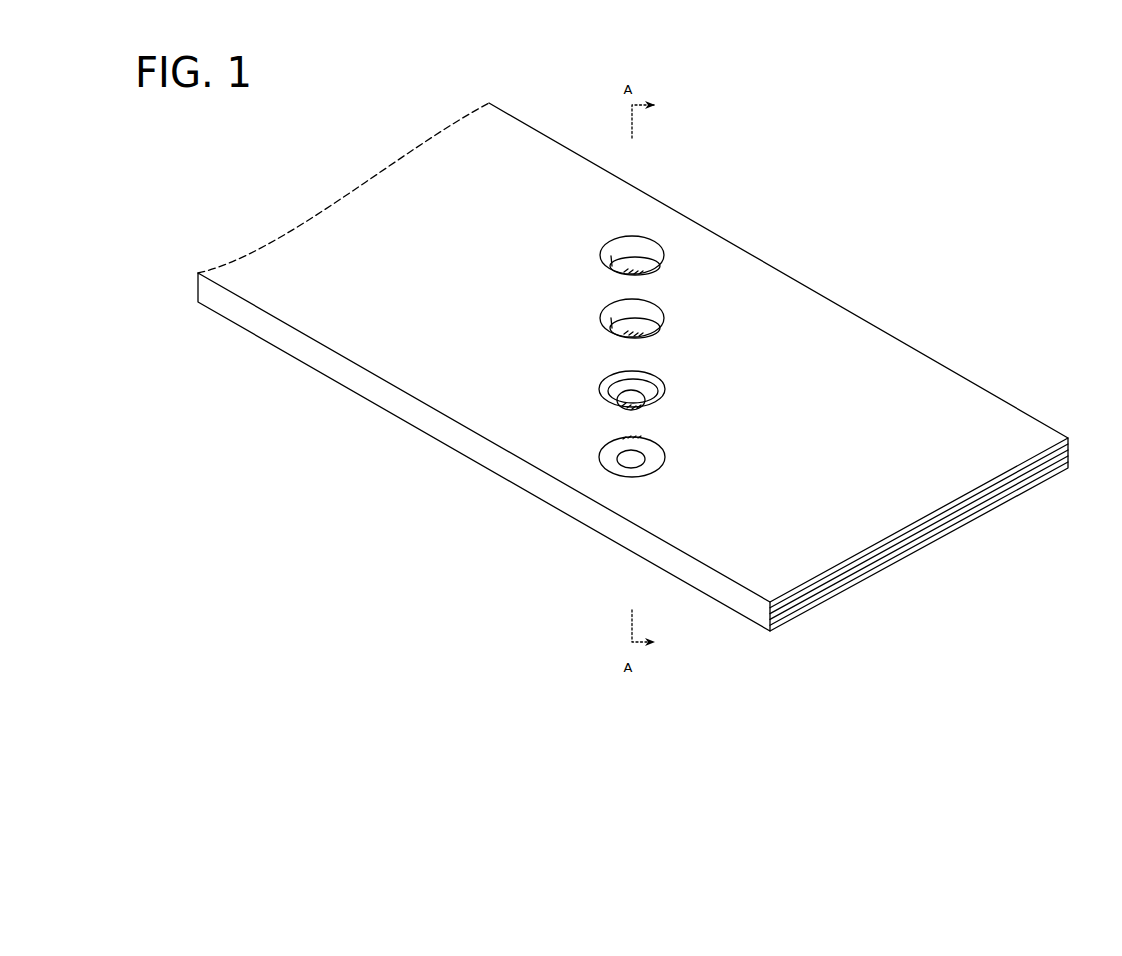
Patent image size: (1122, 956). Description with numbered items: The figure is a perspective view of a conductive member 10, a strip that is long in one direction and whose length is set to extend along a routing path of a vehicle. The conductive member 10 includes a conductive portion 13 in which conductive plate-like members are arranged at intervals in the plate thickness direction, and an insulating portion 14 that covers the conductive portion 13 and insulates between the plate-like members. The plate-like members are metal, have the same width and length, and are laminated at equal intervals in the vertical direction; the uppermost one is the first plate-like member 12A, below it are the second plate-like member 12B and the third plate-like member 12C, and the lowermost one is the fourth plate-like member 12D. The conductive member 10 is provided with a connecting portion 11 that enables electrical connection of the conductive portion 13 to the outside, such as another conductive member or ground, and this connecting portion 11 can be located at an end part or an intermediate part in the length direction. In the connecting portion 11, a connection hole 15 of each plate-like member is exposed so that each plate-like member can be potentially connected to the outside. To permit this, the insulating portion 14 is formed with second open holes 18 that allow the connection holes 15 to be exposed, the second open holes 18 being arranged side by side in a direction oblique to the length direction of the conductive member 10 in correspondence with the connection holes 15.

The conductive member 10 is at (633, 381).
The connecting portion 11 is at (576, 270).
The first plate-like member 12A is at (912, 558).
The second plate-like member 12B is at (892, 567).
The third plate-like member 12C is at (870, 582).
The fourth plate-like member 12D is at (885, 634).
The conductive portion 13 is at (919, 562).
The insulating portion 14 is at (938, 498).
The connection hole 15 is at (660, 330).
The second open hole 18 is at (662, 443).